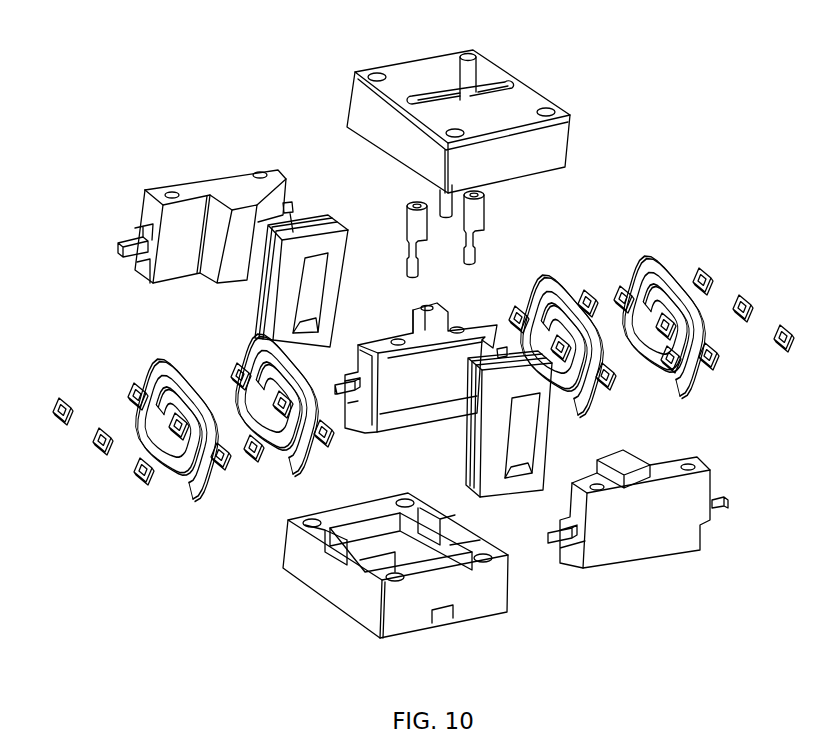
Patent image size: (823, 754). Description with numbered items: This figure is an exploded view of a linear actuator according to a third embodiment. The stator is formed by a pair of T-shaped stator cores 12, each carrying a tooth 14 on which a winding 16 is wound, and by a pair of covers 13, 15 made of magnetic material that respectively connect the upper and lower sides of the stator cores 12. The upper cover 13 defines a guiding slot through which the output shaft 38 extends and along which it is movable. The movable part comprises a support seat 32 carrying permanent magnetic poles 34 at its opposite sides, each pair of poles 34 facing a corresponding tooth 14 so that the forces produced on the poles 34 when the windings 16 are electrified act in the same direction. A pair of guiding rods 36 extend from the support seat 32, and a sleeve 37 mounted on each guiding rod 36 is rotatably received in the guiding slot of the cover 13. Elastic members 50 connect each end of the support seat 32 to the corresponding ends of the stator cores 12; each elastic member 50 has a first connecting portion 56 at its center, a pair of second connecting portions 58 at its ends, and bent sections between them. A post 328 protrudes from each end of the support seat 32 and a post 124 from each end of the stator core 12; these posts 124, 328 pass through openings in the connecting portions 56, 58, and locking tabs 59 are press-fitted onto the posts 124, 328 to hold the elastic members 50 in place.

The stator core 12 is at (648, 527).
The cover 13 is at (530, 108).
The tooth 14 is at (628, 462).
The cover 15 is at (475, 600).
The winding 16 is at (293, 230).
The support seat 32 is at (480, 320).
The permanent magnetic pole 34 is at (457, 367).
The guiding rod 36 is at (412, 247).
The sleeve 37 is at (408, 212).
The output shaft 38 is at (468, 78).
The elastic member 50 is at (243, 353).
The first connecting portion 56 is at (170, 425).
The second connecting portion 58 is at (130, 395).
The locking tab 59 is at (58, 418).
The post 124 is at (130, 237).
The post 328 is at (347, 397).